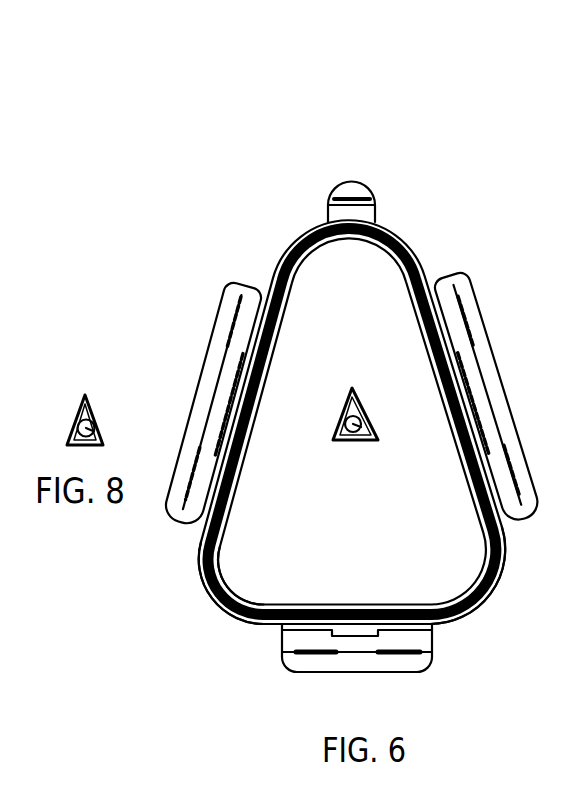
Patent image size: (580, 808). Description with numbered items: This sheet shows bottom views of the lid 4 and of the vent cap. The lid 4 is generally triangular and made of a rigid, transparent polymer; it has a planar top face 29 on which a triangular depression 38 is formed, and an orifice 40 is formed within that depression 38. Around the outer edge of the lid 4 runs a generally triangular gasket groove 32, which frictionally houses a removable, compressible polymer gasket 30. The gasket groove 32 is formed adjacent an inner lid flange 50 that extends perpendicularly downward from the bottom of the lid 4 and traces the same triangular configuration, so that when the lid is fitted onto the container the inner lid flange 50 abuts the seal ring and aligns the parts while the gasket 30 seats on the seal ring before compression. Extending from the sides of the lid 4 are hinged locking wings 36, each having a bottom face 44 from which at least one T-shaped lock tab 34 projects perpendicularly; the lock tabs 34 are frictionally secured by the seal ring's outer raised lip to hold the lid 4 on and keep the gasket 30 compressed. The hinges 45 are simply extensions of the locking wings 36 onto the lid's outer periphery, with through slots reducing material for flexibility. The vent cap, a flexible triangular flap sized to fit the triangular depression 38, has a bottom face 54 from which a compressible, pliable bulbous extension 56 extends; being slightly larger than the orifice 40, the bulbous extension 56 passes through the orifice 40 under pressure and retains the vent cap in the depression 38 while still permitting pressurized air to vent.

In FIG. 6, the lid 4 is at (322, 272).
In FIG. 6, the planar top face 29 is at (268, 573).
In FIG. 6, the gasket 30 is at (403, 240).
In FIG. 6, the gasket groove 32 is at (486, 598).
In FIG. 6, the lock tab 34 is at (248, 297).
In FIG. 6, the locking wing 36 is at (216, 350).
In FIG. 6, the triangular depression 38 is at (352, 392).
In FIG. 6, the orifice 40 is at (378, 445).
In FIG. 6, the bottom face 44 is at (442, 291).
In FIG. 6, the hinge 45 is at (286, 262).
In FIG. 6, the inner lid flange 50 is at (259, 598).
In FIG. 8, the bottom face 54 is at (84, 398).
In FIG. 8, the bulbous extension 56 is at (92, 420).